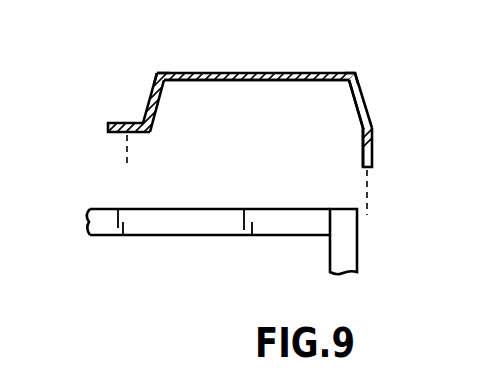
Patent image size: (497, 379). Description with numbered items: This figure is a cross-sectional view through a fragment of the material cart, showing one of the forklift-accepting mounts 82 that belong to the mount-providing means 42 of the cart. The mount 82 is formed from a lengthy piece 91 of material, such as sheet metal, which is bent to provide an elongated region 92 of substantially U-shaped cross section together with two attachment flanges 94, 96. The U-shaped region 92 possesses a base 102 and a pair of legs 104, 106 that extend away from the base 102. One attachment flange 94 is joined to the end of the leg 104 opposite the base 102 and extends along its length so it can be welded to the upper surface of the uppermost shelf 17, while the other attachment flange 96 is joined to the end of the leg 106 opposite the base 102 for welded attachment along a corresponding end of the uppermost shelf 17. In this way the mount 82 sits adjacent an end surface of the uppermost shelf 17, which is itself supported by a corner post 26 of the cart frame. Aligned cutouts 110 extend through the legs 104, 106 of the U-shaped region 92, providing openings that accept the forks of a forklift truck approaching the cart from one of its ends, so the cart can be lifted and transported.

The means for providing two sets of mounts 42 is at (95, 104).
The forklift-accepting mount 82 is at (190, 73).
The elongated region of substantially U-shaped cross section 92 is at (253, 73).
The base 102 is at (254, 82).
The leg 104 is at (152, 120).
The attachment flange 94 is at (110, 130).
The aligned cutouts 110 is at (149, 93).
The lengthy piece of material 91 is at (370, 115).
The attachment flange 96 is at (373, 152).
The leg 106 is at (343, 99).
The uppermost shelf 17 is at (223, 236).
The corner post 26 is at (358, 247).